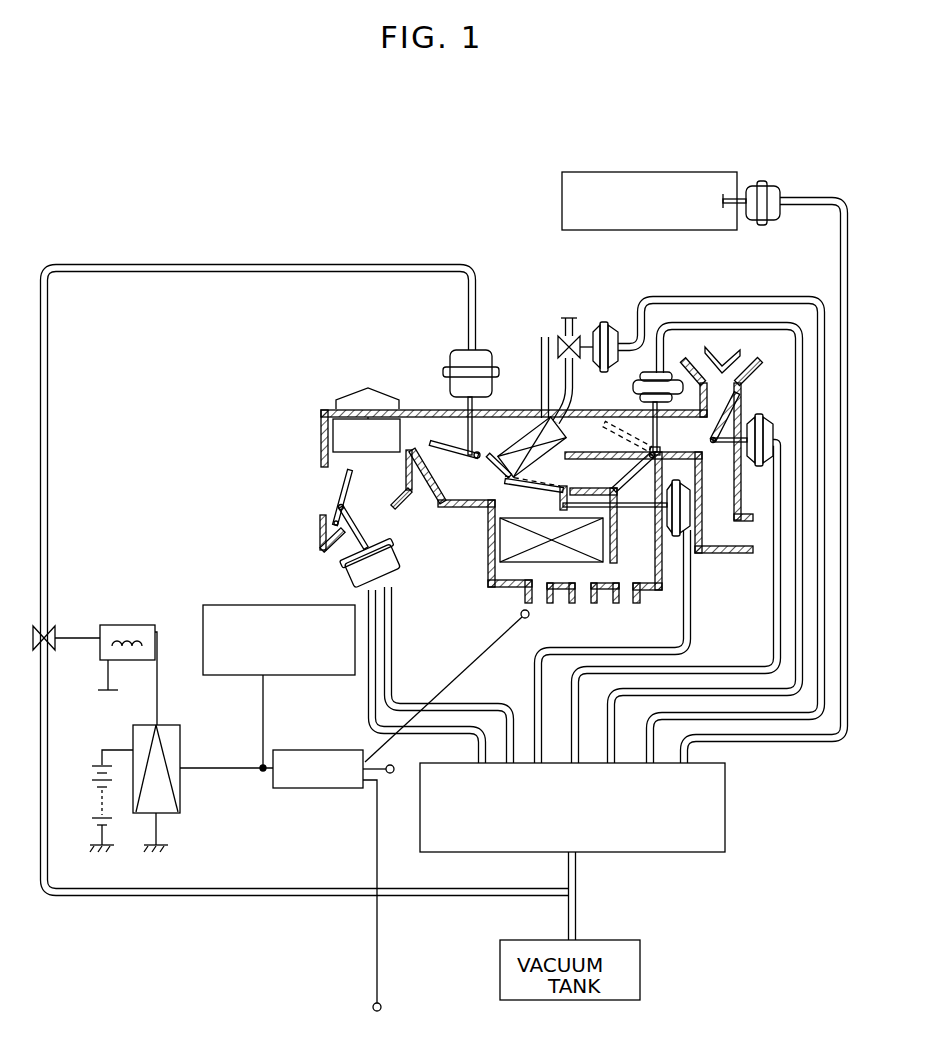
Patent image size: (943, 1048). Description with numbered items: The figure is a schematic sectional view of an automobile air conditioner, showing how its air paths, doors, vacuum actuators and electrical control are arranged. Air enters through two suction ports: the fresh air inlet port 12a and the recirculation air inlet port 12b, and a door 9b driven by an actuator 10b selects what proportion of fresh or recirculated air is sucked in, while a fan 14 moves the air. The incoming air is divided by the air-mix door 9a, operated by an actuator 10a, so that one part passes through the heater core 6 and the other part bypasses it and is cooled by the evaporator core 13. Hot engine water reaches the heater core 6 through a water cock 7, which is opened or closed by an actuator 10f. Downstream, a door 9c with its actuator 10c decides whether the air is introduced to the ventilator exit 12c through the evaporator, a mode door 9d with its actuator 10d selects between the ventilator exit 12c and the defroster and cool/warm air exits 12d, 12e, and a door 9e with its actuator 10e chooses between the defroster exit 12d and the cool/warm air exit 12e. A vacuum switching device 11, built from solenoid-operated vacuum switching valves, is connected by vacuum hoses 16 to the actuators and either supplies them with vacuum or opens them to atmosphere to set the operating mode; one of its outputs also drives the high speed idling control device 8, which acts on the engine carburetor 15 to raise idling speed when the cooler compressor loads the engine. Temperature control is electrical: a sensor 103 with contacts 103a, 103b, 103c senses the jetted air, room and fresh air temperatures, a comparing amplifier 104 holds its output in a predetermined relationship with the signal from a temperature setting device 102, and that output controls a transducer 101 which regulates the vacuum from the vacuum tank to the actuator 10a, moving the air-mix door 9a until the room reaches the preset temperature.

The heater core 6 is at (512, 440).
The water cock 7 is at (561, 338).
The high speed idling control device 8 is at (775, 186).
The air-mix door 9a is at (453, 464).
The intake selection door 9b is at (334, 505).
The bypass door 9c is at (536, 483).
The mode door 9d is at (630, 476).
The defrost selection door 9e is at (735, 400).
The actuator 10a is at (452, 356).
The actuator 10b is at (350, 584).
The actuator 10c is at (691, 512).
The actuator 10d is at (634, 392).
The actuator 10e is at (760, 465).
The actuator 10f is at (606, 325).
The vacuum switching device 11 is at (726, 790).
The air inlet port 12a is at (333, 476).
The air inlet port 12b is at (388, 508).
The air exit 12c is at (585, 604).
The air exit 12d is at (716, 346).
The air exit 12e is at (745, 552).
The evaporator core 13 is at (490, 545).
The fan 14 is at (321, 440).
The engine carburetor 15 is at (668, 172).
The vacuum hoses 16 is at (471, 706).
The transducer 101 is at (112, 625).
The temperature setting device 102 is at (260, 605).
The sensor 103 is at (323, 750).
The sensor 103a is at (520, 615).
The sensor 103b is at (394, 765).
The sensor 103c is at (381, 1006).
The comparing amplifier 104 is at (176, 725).